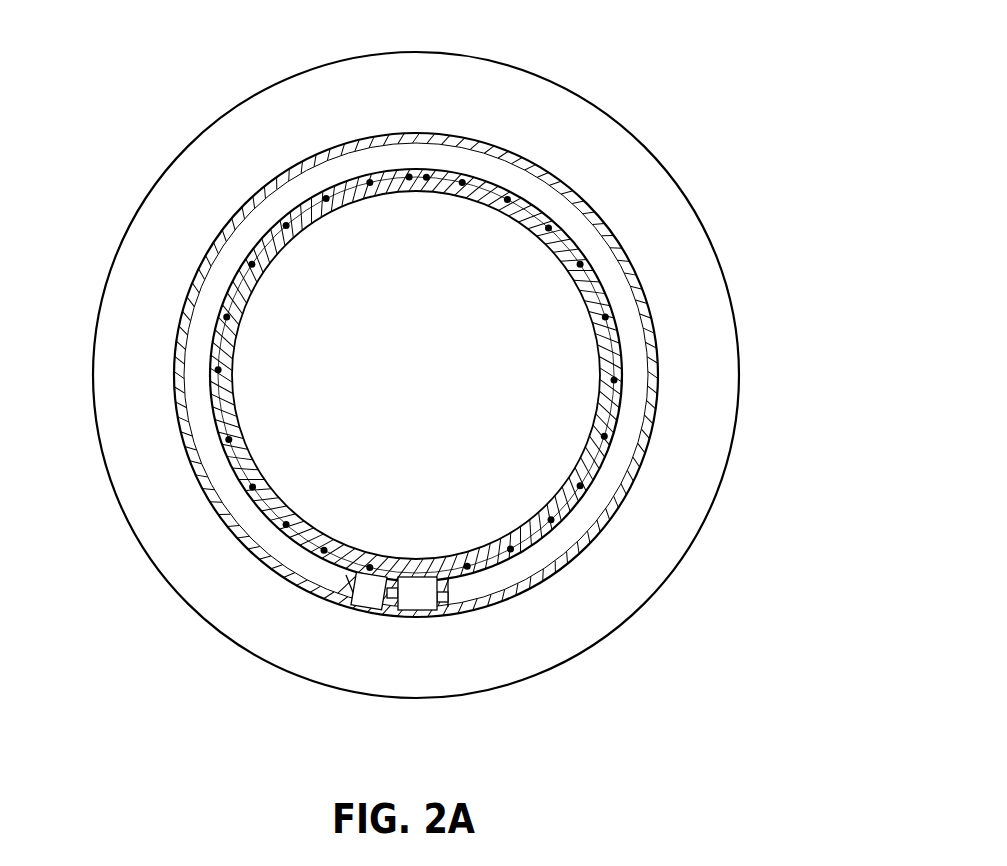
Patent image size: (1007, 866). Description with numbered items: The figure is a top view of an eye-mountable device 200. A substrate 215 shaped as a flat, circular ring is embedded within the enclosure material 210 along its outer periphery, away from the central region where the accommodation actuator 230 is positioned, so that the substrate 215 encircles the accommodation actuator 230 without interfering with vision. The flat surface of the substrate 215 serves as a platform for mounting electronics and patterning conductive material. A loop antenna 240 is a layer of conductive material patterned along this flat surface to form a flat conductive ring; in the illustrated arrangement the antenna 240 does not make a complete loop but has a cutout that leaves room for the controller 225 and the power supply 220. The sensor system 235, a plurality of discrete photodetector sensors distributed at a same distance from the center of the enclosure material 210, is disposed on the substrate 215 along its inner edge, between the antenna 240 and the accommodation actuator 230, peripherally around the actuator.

The eye-mountable device 200 is at (177, 76).
The enclosure material 210 is at (140, 545).
The substrate 215 is at (605, 525).
The power supply 220 is at (365, 585).
The controller 225 is at (417, 600).
The accommodation actuator 230 is at (372, 332).
The sensor system 235 is at (600, 317).
The antenna 240 is at (542, 560).